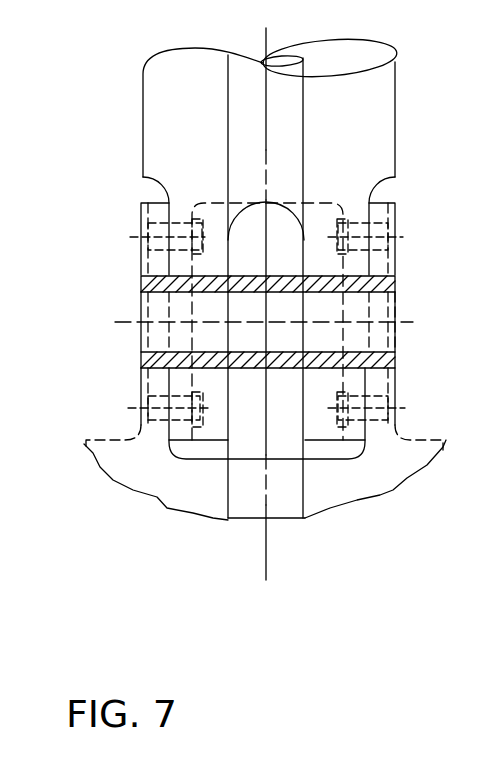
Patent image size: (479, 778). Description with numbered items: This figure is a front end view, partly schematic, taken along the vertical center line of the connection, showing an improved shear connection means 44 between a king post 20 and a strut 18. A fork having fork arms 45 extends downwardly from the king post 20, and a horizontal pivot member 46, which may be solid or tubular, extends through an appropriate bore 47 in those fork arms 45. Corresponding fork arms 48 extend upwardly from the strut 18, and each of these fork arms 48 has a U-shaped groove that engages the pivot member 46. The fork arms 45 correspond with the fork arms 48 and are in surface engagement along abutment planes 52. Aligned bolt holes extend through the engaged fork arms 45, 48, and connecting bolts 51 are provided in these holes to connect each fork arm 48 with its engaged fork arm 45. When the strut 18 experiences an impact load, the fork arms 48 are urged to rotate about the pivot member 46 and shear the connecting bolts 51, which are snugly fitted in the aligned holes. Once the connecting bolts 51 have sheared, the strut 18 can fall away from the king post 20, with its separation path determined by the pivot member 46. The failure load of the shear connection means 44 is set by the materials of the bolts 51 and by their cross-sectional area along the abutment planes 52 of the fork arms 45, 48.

The strut 18 is at (387, 487).
The king post 20 is at (200, 144).
The shear connection means 44 is at (403, 192).
The fork arms 45 is at (180, 382).
The pivot member 46 is at (183, 291).
The bore 47 is at (367, 281).
The fork arms 48 is at (375, 262).
The connecting bolts 51 is at (153, 232).
The abutment planes 52 is at (168, 265).